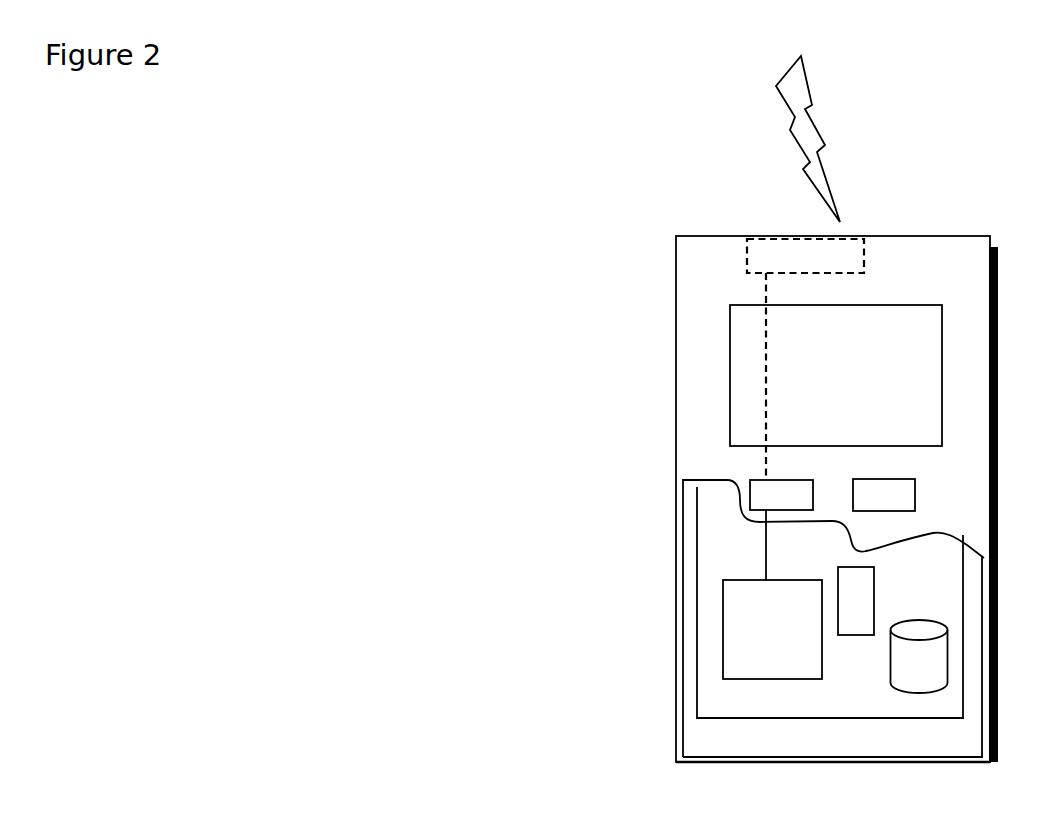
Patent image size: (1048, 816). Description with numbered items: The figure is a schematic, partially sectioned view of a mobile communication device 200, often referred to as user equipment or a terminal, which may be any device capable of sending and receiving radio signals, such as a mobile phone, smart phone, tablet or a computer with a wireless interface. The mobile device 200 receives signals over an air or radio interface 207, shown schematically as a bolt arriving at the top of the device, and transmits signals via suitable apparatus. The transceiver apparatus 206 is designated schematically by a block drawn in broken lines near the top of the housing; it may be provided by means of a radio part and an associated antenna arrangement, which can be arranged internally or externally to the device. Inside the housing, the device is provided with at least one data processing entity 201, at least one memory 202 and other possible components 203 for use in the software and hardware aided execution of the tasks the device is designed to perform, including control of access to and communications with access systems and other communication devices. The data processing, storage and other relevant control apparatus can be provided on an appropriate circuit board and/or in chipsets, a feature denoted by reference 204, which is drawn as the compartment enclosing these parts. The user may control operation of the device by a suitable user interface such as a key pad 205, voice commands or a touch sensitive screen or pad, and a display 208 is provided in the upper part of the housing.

The communication device 200 is at (678, 280).
The data processing entity 201 is at (732, 612).
The memory 202 is at (912, 672).
The other possible components 203 is at (857, 585).
The circuit board 204 is at (723, 698).
The key pad 205 is at (755, 496).
The transceiver apparatus 206 is at (853, 252).
The air or radio interface 207 is at (839, 167).
The display 208 is at (749, 362).